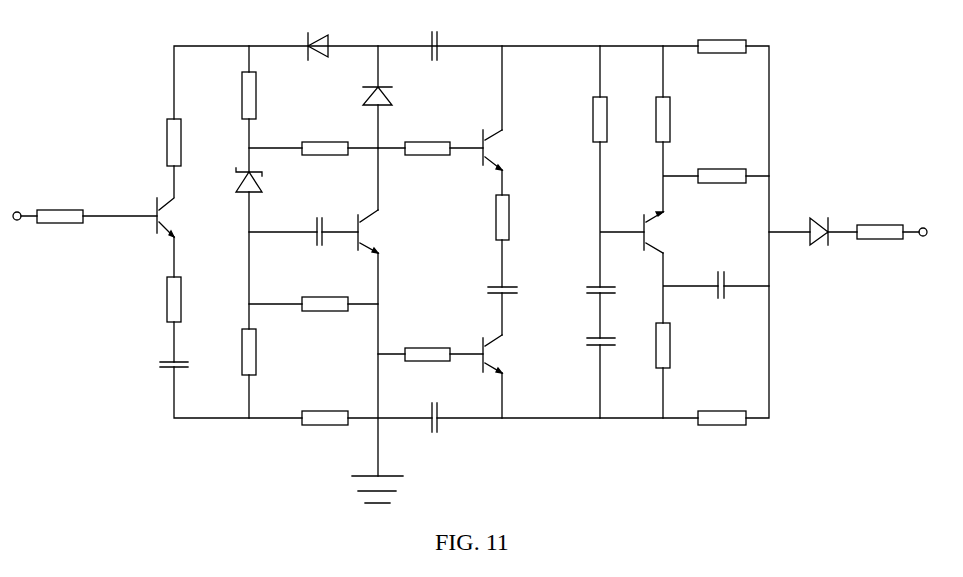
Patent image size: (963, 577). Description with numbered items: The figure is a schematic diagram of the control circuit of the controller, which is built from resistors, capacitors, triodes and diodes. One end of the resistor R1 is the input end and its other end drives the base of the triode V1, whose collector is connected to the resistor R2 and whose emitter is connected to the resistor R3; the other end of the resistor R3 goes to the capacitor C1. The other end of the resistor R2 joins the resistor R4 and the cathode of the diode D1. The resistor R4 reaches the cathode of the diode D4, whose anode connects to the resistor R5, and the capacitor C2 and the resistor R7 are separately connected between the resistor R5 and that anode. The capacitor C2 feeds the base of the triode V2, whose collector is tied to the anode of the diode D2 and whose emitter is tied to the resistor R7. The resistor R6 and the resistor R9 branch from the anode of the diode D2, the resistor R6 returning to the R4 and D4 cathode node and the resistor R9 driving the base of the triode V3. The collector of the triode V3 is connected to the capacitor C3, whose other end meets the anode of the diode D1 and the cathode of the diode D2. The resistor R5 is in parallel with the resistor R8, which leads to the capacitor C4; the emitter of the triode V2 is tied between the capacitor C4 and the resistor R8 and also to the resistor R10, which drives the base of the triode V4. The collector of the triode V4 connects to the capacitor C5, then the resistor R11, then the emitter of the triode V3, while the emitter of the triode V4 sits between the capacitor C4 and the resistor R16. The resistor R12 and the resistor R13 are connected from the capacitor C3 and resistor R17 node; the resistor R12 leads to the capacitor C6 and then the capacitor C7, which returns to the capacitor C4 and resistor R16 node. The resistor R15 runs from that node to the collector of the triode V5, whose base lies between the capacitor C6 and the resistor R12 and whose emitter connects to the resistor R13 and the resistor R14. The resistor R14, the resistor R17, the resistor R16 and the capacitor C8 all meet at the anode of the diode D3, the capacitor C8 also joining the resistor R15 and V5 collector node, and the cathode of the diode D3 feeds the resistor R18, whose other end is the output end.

The resistor R1 is at (60, 207).
The resistor R2 is at (160, 142).
The resistor R3 is at (160, 299).
The resistor R4 is at (236, 95).
The resistor R5 is at (235, 352).
The resistor R6 is at (325, 137).
The resistor R7 is at (325, 314).
The resistor R8 is at (325, 408).
The resistor R9 is at (427, 136).
The resistor R10 is at (427, 344).
The resistor R11 is at (485, 217).
The resistor R12 is at (580, 119).
The resistor R13 is at (680, 119).
The resistor R14 is at (722, 187).
The resistor R15 is at (680, 345).
The resistor R16 is at (722, 408).
The resistor R17 is at (722, 36).
The resistor R18 is at (880, 246).
The capacitor C1 is at (164, 365).
The capacitor C2 is at (305, 228).
The capacitor C3 is at (448, 40).
The capacitor C4 is at (448, 423).
The capacitor C5 is at (491, 280).
The capacitor C6 is at (592, 279).
The capacitor C7 is at (592, 353).
The capacitor C8 is at (733, 280).
The diode D1 is at (322, 35).
The diode D2 is at (384, 85).
The diode D3 is at (818, 243).
The diode D4 is at (236, 183).
The triode V1 is at (151, 217).
The triode V2 is at (382, 230).
The triode V3 is at (505, 150).
The triode V4 is at (505, 354).
The triode V5 is at (667, 232).